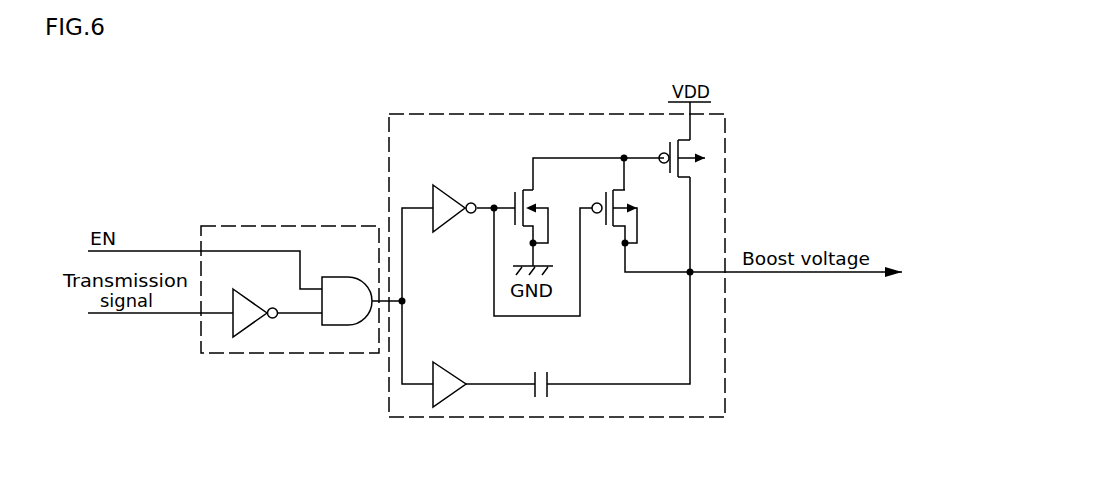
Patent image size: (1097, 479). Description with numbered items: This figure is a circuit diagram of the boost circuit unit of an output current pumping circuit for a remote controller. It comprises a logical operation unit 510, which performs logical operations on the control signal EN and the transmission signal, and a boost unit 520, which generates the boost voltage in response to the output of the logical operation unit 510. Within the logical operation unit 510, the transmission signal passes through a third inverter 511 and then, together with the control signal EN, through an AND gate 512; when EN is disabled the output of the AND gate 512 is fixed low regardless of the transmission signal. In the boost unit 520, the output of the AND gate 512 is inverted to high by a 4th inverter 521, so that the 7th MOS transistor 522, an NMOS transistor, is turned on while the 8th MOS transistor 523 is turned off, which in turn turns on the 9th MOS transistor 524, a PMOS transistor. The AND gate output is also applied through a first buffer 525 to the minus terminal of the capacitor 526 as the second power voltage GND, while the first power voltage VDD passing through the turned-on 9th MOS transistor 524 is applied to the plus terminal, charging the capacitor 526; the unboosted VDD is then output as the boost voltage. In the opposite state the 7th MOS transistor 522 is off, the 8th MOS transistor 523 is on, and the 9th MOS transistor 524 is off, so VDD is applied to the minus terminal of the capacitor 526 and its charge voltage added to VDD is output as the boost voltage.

The logical operation unit 510 is at (290, 353).
The third inverter 511 is at (255, 306).
The AND gate 512 is at (347, 289).
The boost unit 520 is at (607, 417).
The 4th inverter 521 is at (454, 200).
The 7th MOS transistor 522 is at (521, 207).
The 8th MOS transistor 523 is at (610, 207).
The 9th MOS transistor 524 is at (668, 151).
The first buffer 525 is at (455, 375).
The capacitor 526 is at (542, 370).